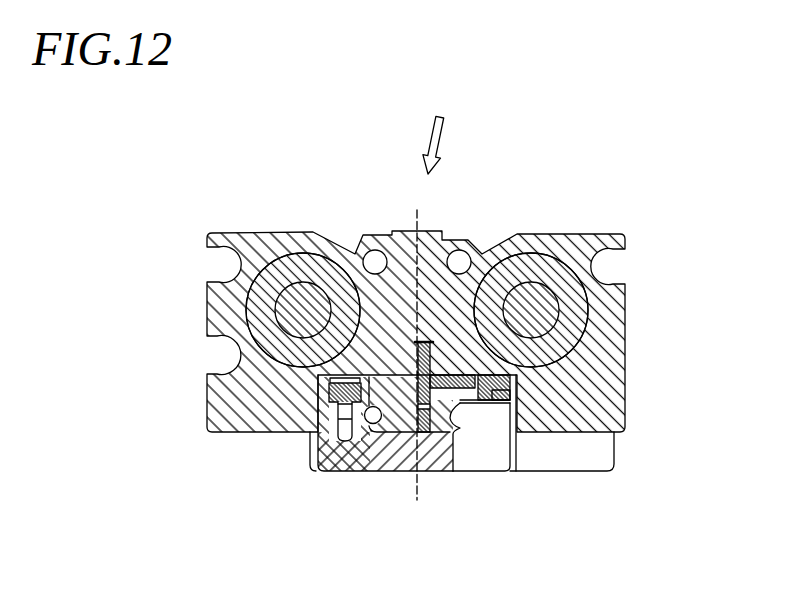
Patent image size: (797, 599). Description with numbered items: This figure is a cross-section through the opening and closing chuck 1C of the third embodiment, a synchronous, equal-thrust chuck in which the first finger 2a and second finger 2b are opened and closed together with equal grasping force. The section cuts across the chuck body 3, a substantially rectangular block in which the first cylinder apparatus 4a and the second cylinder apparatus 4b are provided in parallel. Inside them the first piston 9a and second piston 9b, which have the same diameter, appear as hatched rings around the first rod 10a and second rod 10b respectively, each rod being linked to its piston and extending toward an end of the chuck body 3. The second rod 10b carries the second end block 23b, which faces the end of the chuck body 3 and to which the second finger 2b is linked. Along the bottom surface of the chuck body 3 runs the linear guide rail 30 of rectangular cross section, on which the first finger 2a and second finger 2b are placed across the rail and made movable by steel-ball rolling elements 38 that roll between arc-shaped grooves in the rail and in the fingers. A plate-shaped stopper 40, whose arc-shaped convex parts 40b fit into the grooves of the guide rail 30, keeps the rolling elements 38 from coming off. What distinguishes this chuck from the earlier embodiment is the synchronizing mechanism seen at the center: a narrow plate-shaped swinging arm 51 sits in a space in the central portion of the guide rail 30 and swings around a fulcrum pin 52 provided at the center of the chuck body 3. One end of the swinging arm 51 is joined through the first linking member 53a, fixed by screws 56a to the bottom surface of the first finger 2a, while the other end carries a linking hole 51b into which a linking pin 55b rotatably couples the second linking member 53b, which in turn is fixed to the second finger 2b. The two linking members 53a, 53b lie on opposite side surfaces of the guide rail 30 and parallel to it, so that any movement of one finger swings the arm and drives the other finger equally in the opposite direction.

The opening and closing chuck 1C is at (442, 127).
The chuck body 3 is at (392, 258).
The first cylinder apparatus 4a is at (290, 253).
The second cylinder apparatus 4b is at (546, 253).
The first piston 9a is at (268, 343).
The second piston 9b is at (567, 330).
The first rod 10a is at (296, 297).
The second rod 10b is at (538, 308).
The fulcrum pin 52 is at (428, 346).
The swinging arm 51 is at (448, 376).
The linking hole 51b is at (508, 388).
The first linking member 53a is at (333, 388).
The second linking member 53b is at (510, 400).
The screws 56a is at (366, 421).
The second end block 23b is at (593, 448).
The first finger 2a is at (330, 452).
The second finger 2b is at (494, 473).
The rolling elements 38 is at (343, 460).
The guide rail 30 is at (390, 448).
The stopper 40 is at (467, 452).
The convex parts 40b is at (450, 440).
The linking pin 55b is at (487, 405).